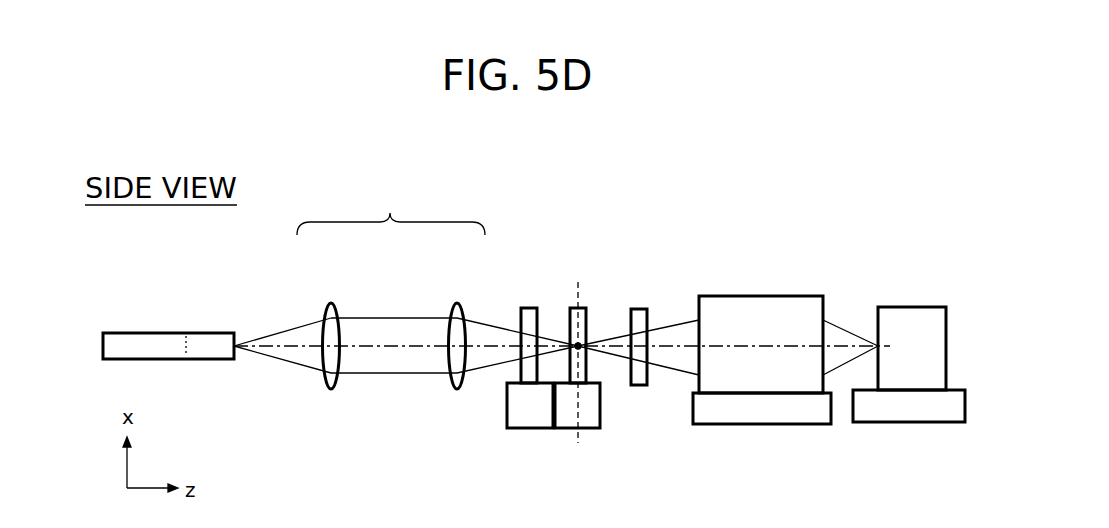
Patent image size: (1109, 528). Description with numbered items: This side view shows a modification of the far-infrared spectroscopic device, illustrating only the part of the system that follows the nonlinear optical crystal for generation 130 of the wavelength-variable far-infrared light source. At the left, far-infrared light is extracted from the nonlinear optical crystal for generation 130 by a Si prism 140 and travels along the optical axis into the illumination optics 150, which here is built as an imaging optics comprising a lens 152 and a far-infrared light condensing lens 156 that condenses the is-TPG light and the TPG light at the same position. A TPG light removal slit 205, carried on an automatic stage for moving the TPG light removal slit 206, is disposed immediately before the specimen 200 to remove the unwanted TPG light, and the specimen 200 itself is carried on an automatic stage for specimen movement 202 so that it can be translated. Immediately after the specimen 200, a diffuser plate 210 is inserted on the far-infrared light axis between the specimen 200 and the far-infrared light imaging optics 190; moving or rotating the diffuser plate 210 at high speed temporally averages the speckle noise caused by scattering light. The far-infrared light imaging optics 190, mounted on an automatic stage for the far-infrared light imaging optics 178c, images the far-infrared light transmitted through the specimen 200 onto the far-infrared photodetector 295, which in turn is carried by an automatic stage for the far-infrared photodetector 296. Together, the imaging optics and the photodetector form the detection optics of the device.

The nonlinear optical crystal for generation 130 is at (137, 333).
The Si prism 140 is at (208, 333).
The illumination optics 150 is at (390, 213).
The lens 152 is at (327, 303).
The far-infrared light condensing lens 156 is at (444, 303).
The TPG light removal slit 205 is at (527, 308).
The specimen 200 is at (583, 308).
The diffuser plate 210 is at (647, 310).
The automatic stage for moving the TPG light removal slit 206 is at (528, 430).
The automatic stage for specimen movement 202 is at (588, 430).
The far-infrared light imaging optics 190 is at (749, 295).
The automatic stage for the far-infrared light imaging optics 178c is at (741, 415).
The far-infrared photodetector 295 is at (910, 308).
The automatic stage for the far-infrared photodetector 296 is at (913, 417).